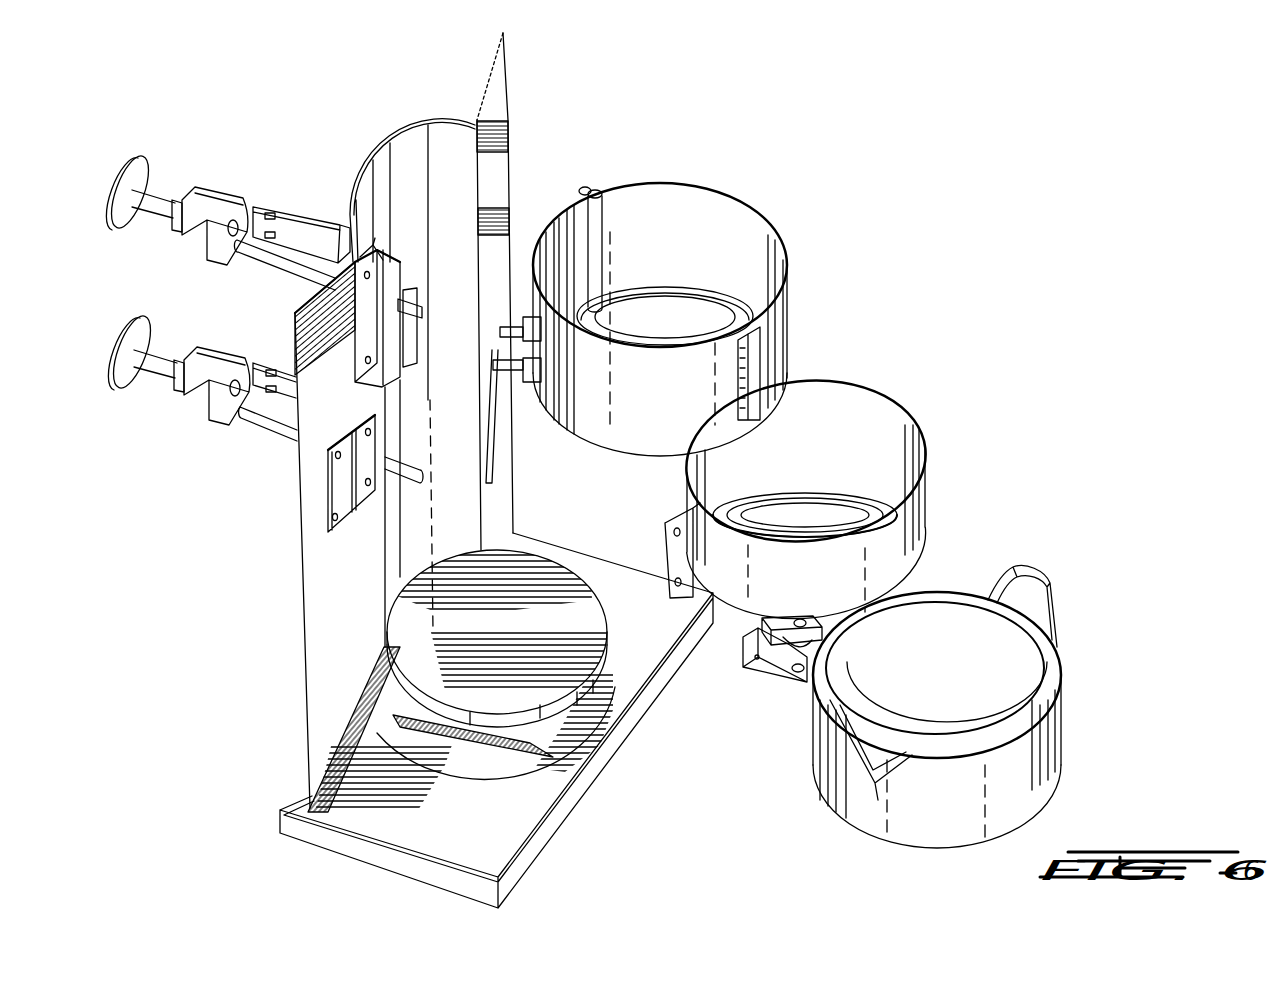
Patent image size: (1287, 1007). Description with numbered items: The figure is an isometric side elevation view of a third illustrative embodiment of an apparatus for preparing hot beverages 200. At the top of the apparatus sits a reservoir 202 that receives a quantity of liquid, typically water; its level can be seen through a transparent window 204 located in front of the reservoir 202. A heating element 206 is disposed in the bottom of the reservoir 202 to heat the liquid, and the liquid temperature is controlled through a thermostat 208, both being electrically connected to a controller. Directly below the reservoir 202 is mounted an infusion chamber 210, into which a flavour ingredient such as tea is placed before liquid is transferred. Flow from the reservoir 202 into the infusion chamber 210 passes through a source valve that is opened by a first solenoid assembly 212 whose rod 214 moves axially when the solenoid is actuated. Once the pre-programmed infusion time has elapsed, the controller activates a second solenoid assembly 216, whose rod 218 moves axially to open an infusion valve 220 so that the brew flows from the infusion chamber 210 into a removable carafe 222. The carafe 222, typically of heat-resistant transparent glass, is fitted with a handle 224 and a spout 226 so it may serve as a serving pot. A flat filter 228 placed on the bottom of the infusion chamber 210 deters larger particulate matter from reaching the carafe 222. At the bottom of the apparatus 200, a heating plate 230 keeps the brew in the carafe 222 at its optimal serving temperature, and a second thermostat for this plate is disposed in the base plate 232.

The apparatus for the preparation of hot beverages 200 is at (893, 218).
The reservoir 202 is at (727, 190).
The transparent window 204 is at (752, 357).
The heating element 206 is at (690, 313).
The thermostat 208 is at (593, 235).
The infusion chamber 210 is at (890, 450).
The first solenoid assembly 212 is at (200, 212).
The rod 214 is at (282, 263).
The second solenoid assembly 216 is at (193, 383).
The rod 218 is at (273, 427).
The infusion valve 220 is at (777, 637).
The removable carafe 222 is at (1033, 767).
The handle 224 is at (1028, 572).
The spout 226 is at (867, 787).
The flat filter 228 is at (813, 520).
The heating plate 230 is at (573, 737).
The base plate 232 is at (487, 693).